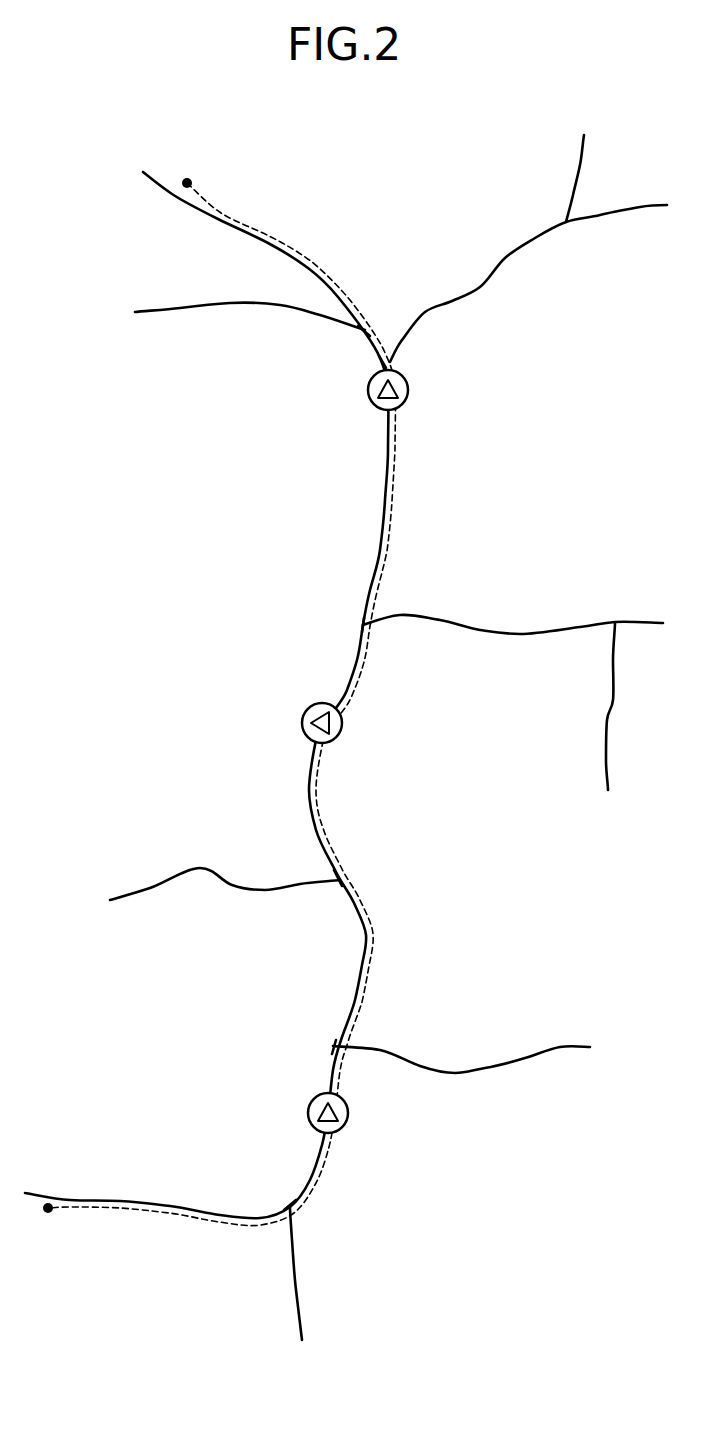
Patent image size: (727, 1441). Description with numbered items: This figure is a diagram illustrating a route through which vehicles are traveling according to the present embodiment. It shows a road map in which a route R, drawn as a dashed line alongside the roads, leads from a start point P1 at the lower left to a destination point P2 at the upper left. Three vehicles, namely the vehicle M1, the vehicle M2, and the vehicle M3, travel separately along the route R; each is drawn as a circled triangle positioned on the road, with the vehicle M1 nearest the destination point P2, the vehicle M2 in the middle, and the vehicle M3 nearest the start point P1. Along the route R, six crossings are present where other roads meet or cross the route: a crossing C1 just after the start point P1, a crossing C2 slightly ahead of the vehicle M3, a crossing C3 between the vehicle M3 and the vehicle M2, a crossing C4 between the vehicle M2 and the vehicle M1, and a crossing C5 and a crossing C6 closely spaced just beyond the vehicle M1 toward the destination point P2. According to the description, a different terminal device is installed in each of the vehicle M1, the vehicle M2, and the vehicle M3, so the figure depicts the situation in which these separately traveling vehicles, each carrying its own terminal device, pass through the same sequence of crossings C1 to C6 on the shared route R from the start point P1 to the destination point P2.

The start point P1 is at (48, 1215).
The destination point P2 is at (187, 178).
The route R is at (372, 935).
The vehicle M1 is at (408, 392).
The vehicle M2 is at (343, 732).
The vehicle M3 is at (349, 1115).
The crossing C1 is at (285, 1197).
The crossing C2 is at (323, 1046).
The crossing C3 is at (336, 892).
The crossing C4 is at (354, 626).
The crossing C5 is at (373, 363).
The crossing C6 is at (360, 333).